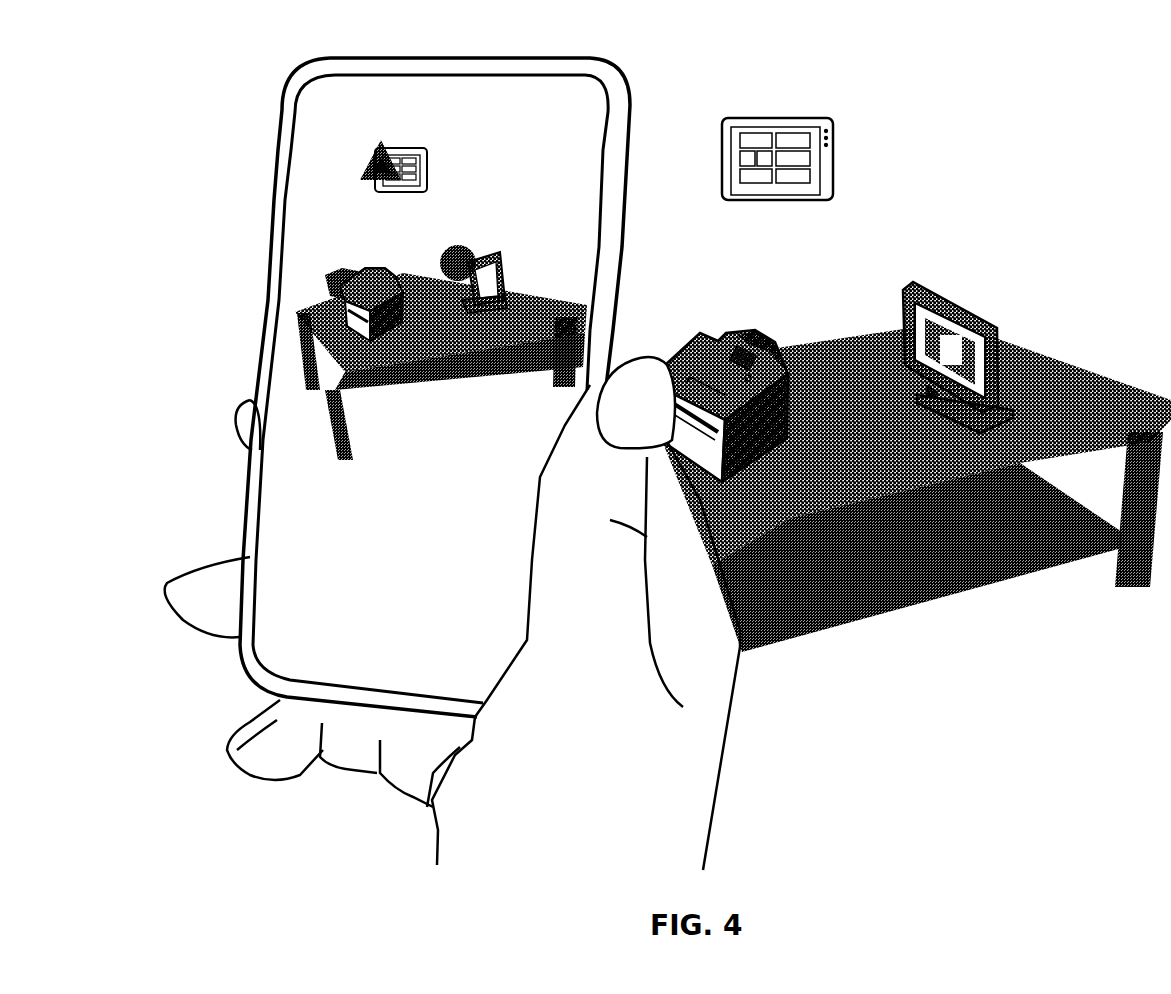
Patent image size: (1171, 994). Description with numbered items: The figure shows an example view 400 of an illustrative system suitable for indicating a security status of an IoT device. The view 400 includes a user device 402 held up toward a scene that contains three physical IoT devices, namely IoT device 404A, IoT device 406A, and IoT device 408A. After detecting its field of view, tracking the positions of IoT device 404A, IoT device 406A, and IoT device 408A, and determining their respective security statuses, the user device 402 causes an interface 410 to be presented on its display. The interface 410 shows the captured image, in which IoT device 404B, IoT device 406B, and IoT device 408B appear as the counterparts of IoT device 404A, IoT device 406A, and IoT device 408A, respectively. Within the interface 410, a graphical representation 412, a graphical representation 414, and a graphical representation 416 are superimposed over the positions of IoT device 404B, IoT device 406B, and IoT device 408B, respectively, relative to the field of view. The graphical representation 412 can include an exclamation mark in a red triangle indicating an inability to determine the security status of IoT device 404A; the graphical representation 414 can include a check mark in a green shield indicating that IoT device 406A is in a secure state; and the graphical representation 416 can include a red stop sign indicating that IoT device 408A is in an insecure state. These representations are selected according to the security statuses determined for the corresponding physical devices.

The view 400 is at (1106, 56).
The user device 402 is at (480, 367).
The IoT device 404A is at (822, 120).
The IoT device 404B is at (422, 155).
The IoT device 406A is at (770, 340).
The IoT device 406B is at (374, 268).
The IoT device 408A is at (957, 300).
The IoT device 408B is at (497, 270).
The interface 410 is at (362, 118).
The graphical representation 412 is at (373, 155).
The graphical representation 414 is at (330, 286).
The graphical representation 416 is at (460, 246).